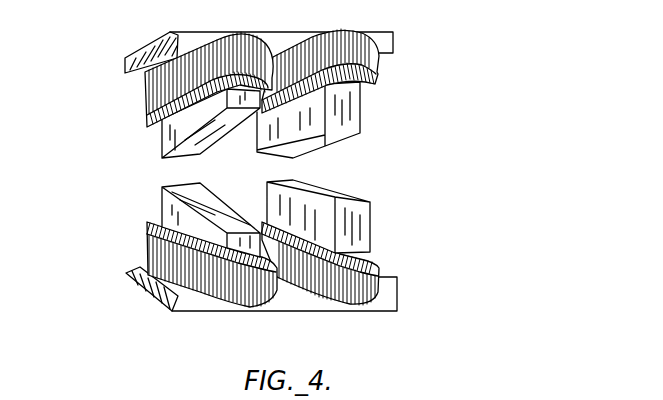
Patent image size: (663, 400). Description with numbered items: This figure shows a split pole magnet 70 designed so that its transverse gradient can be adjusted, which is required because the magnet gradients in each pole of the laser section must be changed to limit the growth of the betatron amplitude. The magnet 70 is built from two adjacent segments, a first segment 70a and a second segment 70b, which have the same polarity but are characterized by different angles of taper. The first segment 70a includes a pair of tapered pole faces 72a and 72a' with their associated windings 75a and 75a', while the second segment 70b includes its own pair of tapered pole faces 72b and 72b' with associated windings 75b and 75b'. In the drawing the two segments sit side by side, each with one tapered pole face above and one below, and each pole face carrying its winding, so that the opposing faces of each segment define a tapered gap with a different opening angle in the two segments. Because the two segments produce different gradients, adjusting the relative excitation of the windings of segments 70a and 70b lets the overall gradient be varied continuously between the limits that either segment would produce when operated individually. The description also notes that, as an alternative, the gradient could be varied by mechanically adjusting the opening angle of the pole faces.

The split pole magnet 70 is at (528, 160).
The first magnet segment 70a is at (154, 208).
The second magnet segment 70b is at (378, 117).
The tapered pole face 72a is at (211, 129).
The tapered pole face 72a' is at (211, 214).
The tapered pole face 72b is at (312, 124).
The tapered pole face 72b' is at (319, 210).
The winding 75a is at (170, 79).
The winding 75a' is at (172, 264).
The winding 75b is at (350, 71).
The winding 75b' is at (351, 263).